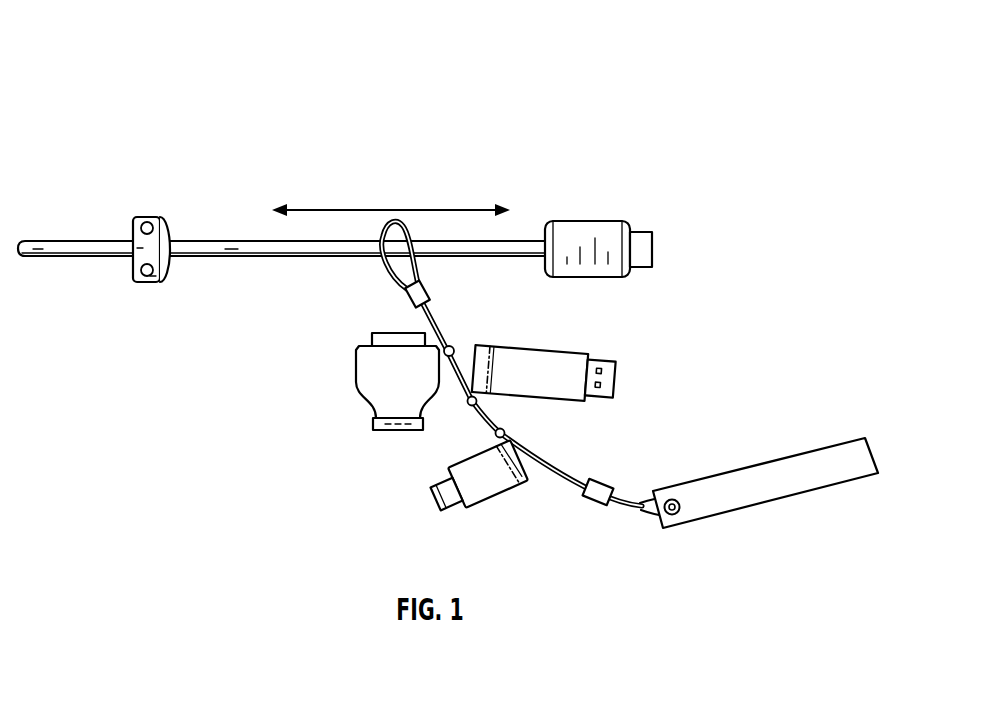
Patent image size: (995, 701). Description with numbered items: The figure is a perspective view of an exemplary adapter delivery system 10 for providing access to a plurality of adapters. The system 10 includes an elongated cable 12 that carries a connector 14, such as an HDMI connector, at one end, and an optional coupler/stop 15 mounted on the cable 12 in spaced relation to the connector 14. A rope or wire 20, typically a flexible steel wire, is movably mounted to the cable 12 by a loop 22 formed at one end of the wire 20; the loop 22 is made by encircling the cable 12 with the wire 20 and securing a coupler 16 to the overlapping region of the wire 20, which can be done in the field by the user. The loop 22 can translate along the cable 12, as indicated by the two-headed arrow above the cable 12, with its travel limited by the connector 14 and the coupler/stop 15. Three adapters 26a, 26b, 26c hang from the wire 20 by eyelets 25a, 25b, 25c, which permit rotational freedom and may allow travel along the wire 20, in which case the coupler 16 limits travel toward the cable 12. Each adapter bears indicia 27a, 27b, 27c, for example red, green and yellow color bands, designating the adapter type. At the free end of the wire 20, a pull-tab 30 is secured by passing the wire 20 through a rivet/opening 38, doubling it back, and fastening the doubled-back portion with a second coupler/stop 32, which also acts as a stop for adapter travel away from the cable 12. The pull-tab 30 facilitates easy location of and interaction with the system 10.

The adapter delivery system 10 is at (142, 54).
The elongated cable 12 is at (223, 240).
The connector 14 is at (588, 238).
The coupler/stop 15 is at (153, 217).
The coupler 16 is at (407, 298).
The wire 20 is at (552, 462).
The loop 22 is at (385, 266).
The eyelet 25a is at (452, 348).
The eyelet 25b is at (468, 405).
The eyelet 25c is at (503, 427).
The adapter 26a is at (367, 417).
The adapter 26b is at (546, 349).
The adapter 26c is at (486, 506).
The indicia 27a is at (397, 432).
The indicia 27b is at (515, 346).
The indicia 27c is at (510, 486).
The pull-tab 30 is at (765, 502).
The second coupler/stop 32 is at (592, 509).
The rivet/opening 38 is at (678, 518).